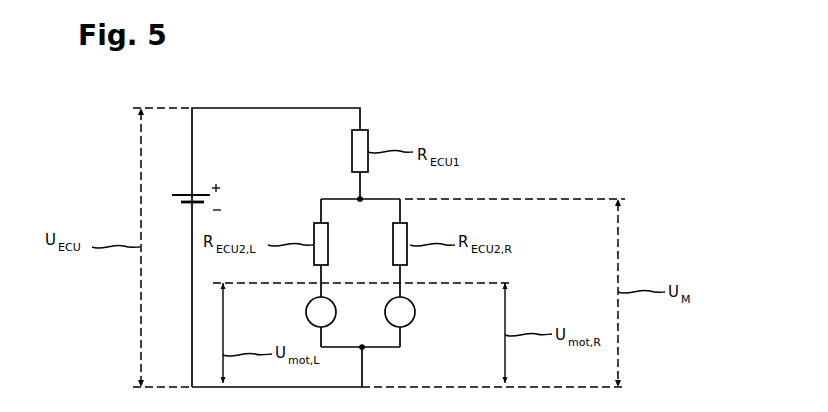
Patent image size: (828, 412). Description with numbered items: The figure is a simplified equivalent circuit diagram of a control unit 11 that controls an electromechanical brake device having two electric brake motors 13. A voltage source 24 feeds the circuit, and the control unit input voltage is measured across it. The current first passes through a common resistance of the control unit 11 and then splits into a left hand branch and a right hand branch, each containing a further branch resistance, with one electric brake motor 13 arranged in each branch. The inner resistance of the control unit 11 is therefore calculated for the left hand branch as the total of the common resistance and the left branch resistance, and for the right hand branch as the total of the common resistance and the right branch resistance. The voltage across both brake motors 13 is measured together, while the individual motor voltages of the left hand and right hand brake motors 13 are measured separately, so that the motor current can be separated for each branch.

The control unit 11 is at (499, 170).
The electric brake motor 13 is at (306, 312).
The voltage source / battery 24 is at (183, 193).